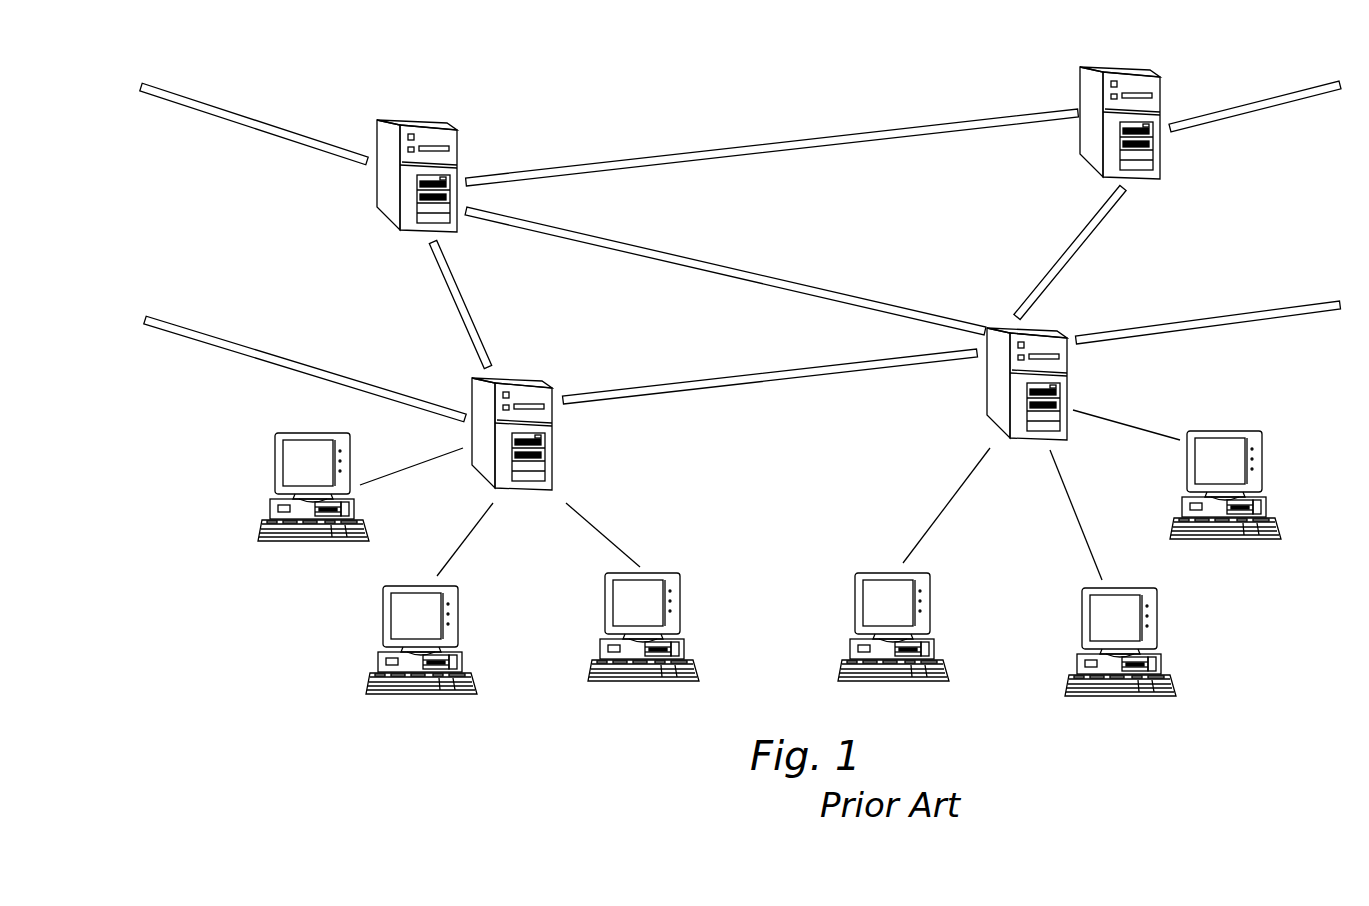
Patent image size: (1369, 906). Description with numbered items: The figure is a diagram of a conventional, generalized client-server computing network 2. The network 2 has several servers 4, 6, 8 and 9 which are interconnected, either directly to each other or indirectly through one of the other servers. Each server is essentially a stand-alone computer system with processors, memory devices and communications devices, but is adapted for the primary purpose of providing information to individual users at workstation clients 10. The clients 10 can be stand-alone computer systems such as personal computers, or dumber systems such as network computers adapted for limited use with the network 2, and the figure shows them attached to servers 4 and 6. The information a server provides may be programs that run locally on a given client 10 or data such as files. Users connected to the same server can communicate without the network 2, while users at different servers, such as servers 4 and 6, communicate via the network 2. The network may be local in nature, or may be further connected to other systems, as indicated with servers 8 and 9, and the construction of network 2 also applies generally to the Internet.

The client-server computing network 2 is at (272, 694).
The server 4 is at (549, 443).
The server 6 is at (997, 388).
The server 8 is at (386, 179).
The server 9 is at (1106, 43).
The workstation client 10 is at (438, 697).